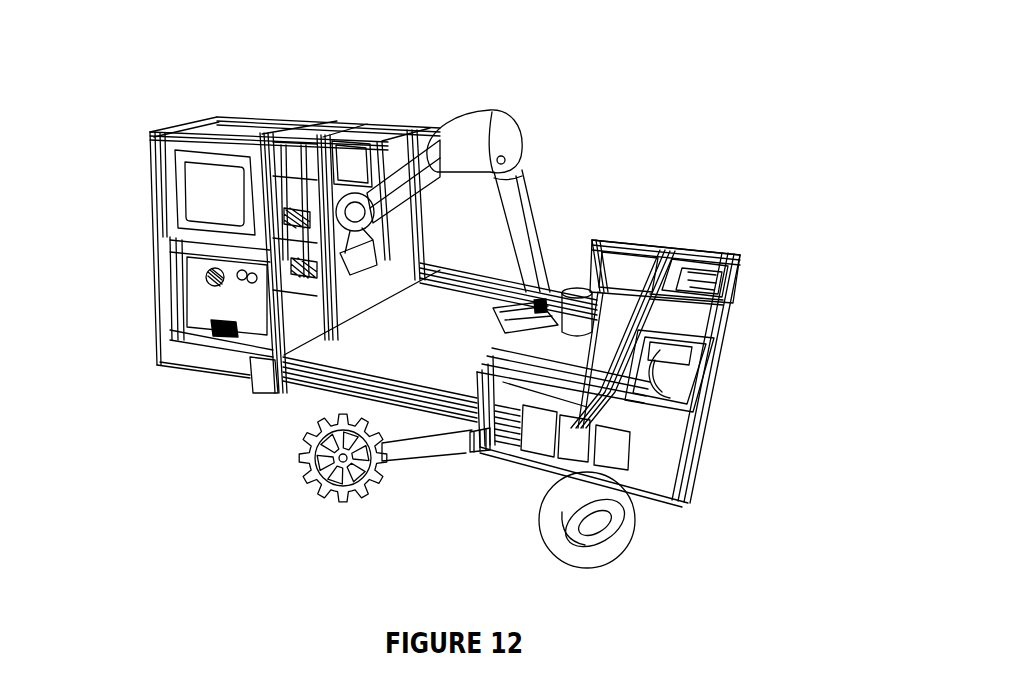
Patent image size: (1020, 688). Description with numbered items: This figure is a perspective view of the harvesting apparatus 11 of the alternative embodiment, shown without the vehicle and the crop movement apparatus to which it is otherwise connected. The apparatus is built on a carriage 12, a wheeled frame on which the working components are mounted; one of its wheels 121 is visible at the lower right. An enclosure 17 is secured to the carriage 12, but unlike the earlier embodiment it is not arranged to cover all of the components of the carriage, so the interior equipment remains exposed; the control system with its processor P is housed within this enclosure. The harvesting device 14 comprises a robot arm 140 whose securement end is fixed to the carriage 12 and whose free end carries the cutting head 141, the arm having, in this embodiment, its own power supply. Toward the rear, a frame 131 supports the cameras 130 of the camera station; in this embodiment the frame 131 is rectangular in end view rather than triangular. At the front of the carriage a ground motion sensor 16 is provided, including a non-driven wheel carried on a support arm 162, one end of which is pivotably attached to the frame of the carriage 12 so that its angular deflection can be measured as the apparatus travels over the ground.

The harvesting apparatus 11 is at (683, 79).
The carriage 12 is at (196, 415).
The harvesting device 14 is at (525, 88).
The ground motion sensor 16 is at (295, 484).
The enclosure 17 is at (150, 148).
The processor P is at (203, 210).
The wheels 121 is at (620, 549).
The cameras 130 is at (700, 312).
The frame 131 is at (700, 375).
The robot arm 140 is at (433, 163).
The cutting head 141 is at (575, 290).
The support arm 162 is at (423, 450).